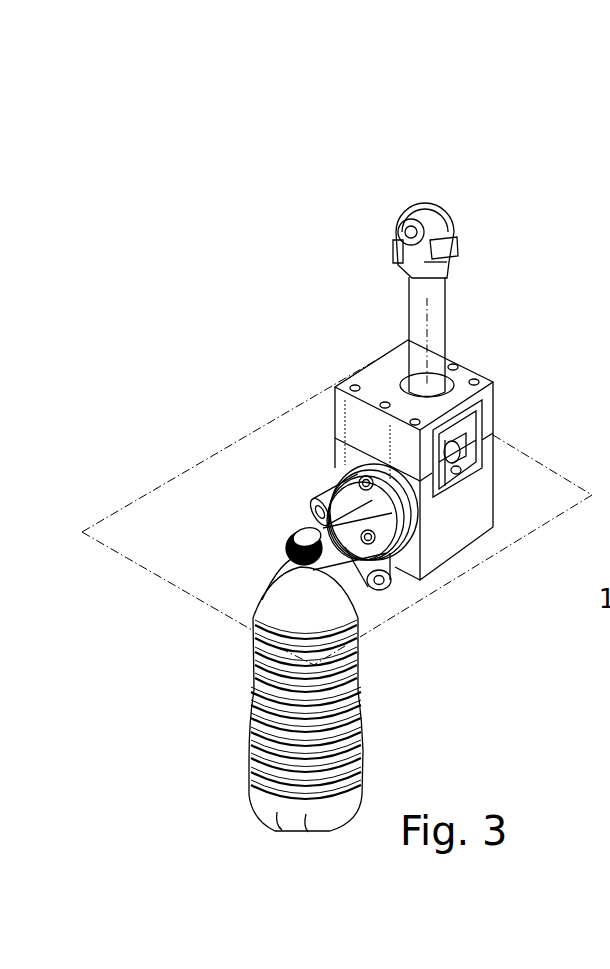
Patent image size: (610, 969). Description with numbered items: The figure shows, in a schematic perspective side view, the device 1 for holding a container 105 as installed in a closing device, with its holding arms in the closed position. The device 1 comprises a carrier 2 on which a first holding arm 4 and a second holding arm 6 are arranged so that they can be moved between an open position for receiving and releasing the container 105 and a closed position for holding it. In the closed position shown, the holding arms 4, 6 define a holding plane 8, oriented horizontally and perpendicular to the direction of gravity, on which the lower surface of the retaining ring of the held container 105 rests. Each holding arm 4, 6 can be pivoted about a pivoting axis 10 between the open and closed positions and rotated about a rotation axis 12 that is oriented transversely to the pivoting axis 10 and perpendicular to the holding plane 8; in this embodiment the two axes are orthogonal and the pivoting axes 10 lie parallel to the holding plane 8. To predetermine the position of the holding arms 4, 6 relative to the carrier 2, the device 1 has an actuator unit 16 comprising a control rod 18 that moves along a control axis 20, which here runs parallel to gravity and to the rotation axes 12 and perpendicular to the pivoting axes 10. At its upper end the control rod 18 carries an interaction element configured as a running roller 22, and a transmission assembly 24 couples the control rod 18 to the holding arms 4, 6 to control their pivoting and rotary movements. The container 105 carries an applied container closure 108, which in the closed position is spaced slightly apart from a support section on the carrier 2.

The device 1 is at (236, 186).
The carrier 2 is at (483, 405).
The first holding arm 4 is at (412, 570).
The second holding arm 6 is at (324, 492).
The holding plane 8 is at (131, 500).
The pivoting axis 10 is at (278, 566).
The rotation axis 12 is at (390, 440).
The actuator unit 16 is at (365, 222).
The control rod 18 is at (437, 292).
The control axis 20 is at (427, 343).
The running roller 22 is at (421, 200).
The transmission assembly 24 is at (509, 436).
The container 105 is at (258, 797).
The container closure 108 is at (297, 533).